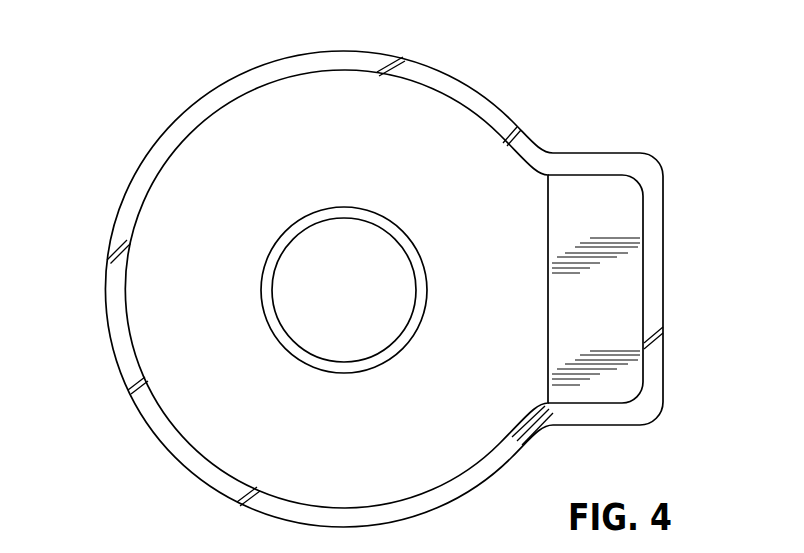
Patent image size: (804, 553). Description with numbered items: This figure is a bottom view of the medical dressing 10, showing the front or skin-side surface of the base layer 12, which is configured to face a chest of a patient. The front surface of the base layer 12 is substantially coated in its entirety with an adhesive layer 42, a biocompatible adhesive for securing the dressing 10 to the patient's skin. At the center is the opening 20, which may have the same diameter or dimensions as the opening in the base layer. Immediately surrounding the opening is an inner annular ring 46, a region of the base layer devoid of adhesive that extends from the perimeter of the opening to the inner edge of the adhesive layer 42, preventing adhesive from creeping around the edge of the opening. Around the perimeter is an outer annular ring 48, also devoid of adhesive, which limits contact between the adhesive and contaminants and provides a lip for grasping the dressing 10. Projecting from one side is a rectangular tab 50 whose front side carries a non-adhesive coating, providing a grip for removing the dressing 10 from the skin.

The medical dressing 10 is at (538, 75).
The base layer 12 is at (146, 150).
The opening 20 is at (340, 294).
The adhesive layer 42 is at (410, 100).
The inner annular ring 46 is at (325, 219).
The outer annular ring 48 is at (528, 158).
The rectangular tab 50 is at (627, 390).